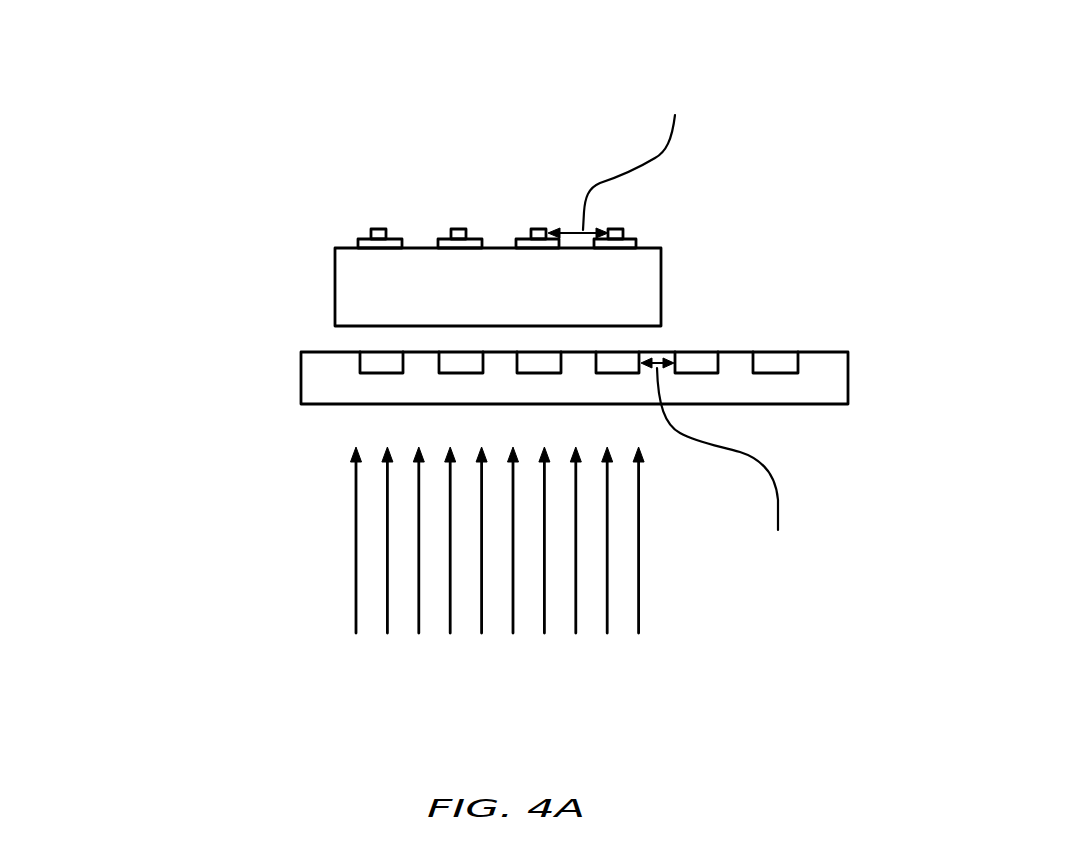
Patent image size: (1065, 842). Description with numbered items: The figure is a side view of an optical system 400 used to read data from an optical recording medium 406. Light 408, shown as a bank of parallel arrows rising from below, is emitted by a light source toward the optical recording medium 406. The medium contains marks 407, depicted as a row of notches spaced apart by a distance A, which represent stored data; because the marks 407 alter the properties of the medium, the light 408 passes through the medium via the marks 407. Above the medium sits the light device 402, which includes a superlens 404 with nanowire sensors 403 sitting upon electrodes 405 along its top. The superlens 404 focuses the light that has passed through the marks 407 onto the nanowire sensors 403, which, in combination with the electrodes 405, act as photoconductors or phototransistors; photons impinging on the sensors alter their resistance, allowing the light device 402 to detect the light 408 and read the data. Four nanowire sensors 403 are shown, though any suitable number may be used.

The optical system 400 is at (515, 35).
The light device 402 is at (320, 230).
The nanowire sensors 403 is at (615, 229).
The superlens 404 is at (592, 300).
The electrodes 405 is at (638, 247).
The optical recording medium 406 is at (301, 373).
The marks 407 is at (777, 362).
The light 408 is at (639, 643).